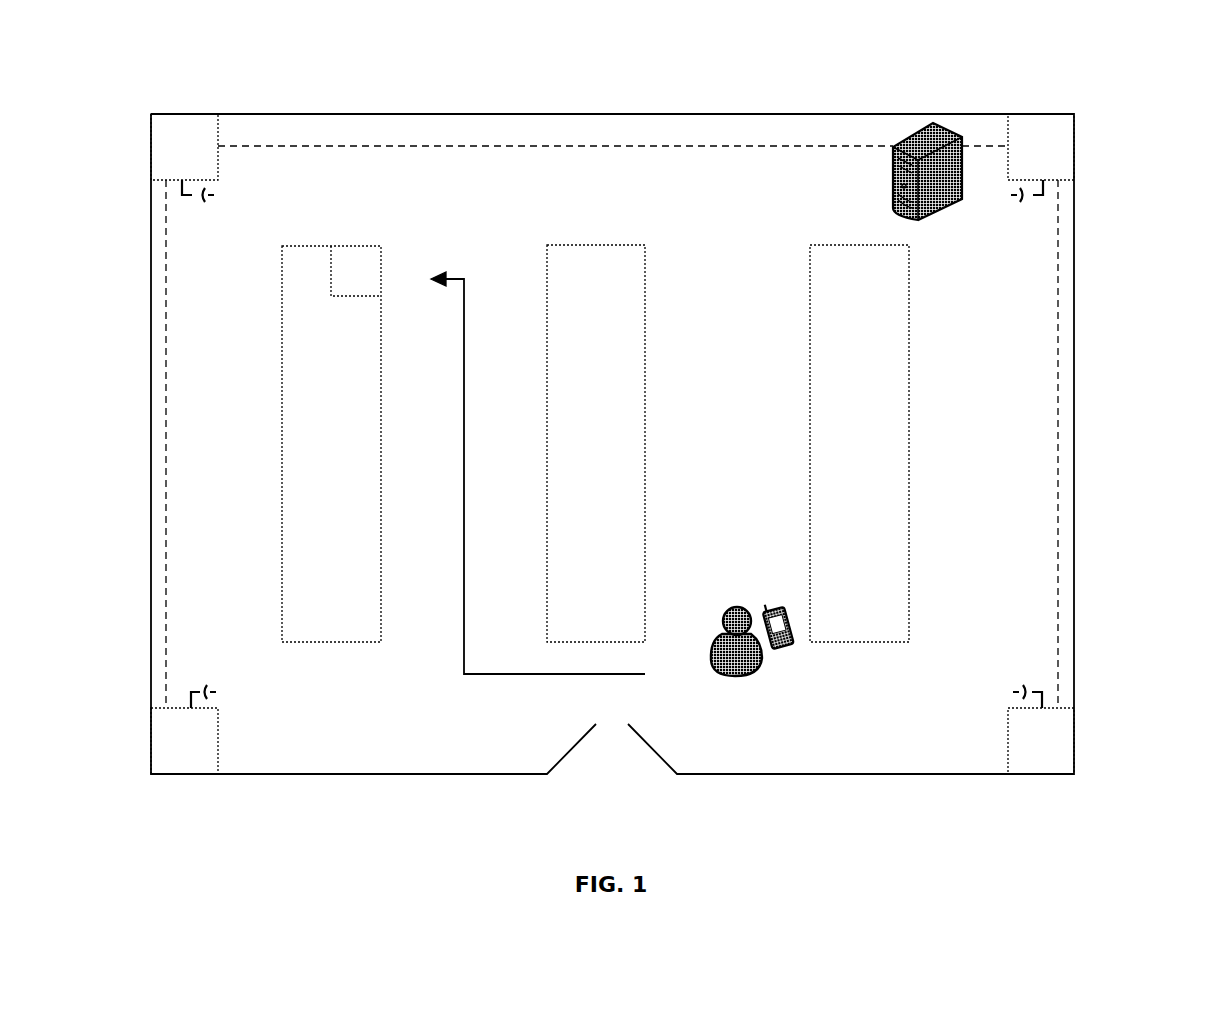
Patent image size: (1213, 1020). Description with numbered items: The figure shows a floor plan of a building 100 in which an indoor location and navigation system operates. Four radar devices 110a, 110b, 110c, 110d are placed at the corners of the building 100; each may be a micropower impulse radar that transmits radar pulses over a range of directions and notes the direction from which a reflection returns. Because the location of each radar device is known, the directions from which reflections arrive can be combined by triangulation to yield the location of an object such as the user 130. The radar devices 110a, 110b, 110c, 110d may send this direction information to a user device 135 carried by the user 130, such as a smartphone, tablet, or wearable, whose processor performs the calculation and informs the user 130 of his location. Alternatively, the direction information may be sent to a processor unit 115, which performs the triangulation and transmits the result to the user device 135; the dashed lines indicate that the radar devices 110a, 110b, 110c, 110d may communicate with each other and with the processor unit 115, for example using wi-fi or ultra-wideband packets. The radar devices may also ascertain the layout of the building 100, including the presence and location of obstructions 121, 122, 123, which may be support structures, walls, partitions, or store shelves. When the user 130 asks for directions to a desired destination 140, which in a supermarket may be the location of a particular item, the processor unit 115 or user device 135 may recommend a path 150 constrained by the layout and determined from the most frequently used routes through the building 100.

The building 100 is at (1157, 130).
The radar device 110a is at (184, 729).
The radar device 110b is at (184, 158).
The radar device 110c is at (1041, 158).
The radar device 110d is at (1041, 729).
The processor unit 115 is at (895, 186).
The obstruction 121 is at (331, 444).
The obstruction 122 is at (596, 443).
The obstruction 123 is at (859, 443).
The user 130 is at (745, 677).
The user device 135 is at (770, 600).
The destination 140 is at (382, 270).
The path 150 is at (512, 677).